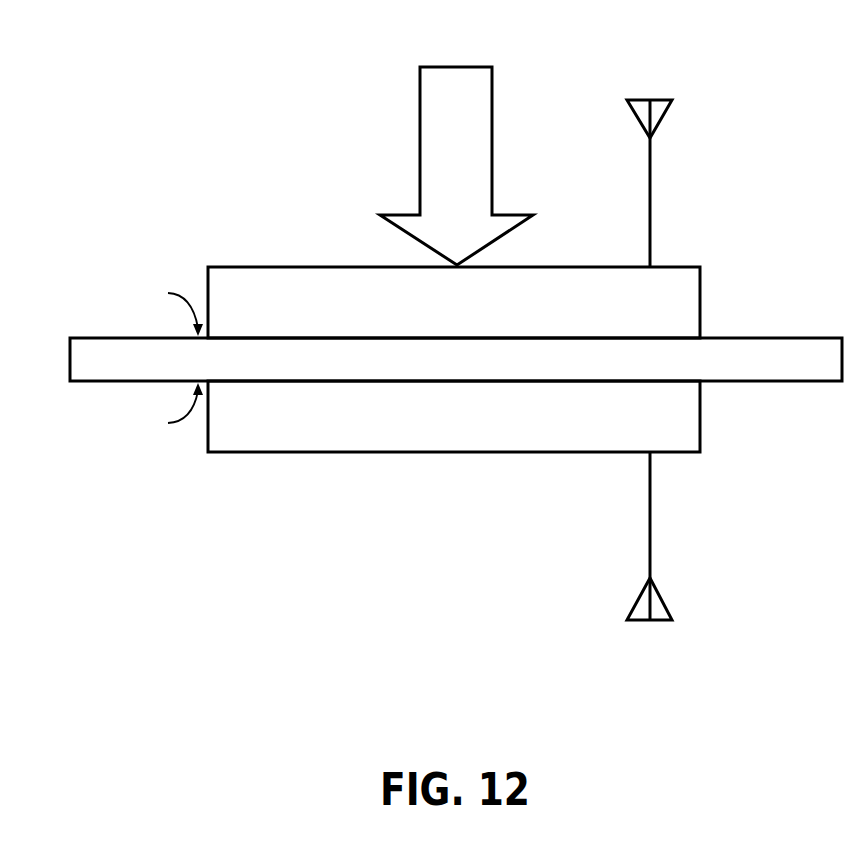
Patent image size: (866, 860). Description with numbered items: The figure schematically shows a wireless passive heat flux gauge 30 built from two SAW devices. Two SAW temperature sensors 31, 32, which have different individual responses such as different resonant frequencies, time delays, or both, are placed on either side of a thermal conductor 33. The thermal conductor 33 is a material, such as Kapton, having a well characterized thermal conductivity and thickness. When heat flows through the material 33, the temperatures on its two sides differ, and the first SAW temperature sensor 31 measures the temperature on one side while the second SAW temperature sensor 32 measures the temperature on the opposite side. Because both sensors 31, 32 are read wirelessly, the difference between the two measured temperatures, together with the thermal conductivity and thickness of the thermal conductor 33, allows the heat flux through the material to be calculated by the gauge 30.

The wireless passive heat flux gauge 30 is at (277, 161).
The SAW temperature sensor 31 is at (273, 315).
The SAW temperature sensor 32 is at (273, 428).
The thermal conductor 33 is at (273, 371).